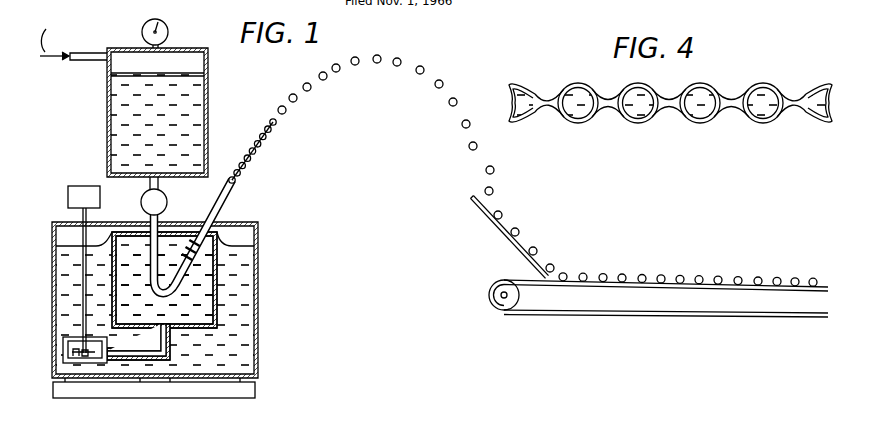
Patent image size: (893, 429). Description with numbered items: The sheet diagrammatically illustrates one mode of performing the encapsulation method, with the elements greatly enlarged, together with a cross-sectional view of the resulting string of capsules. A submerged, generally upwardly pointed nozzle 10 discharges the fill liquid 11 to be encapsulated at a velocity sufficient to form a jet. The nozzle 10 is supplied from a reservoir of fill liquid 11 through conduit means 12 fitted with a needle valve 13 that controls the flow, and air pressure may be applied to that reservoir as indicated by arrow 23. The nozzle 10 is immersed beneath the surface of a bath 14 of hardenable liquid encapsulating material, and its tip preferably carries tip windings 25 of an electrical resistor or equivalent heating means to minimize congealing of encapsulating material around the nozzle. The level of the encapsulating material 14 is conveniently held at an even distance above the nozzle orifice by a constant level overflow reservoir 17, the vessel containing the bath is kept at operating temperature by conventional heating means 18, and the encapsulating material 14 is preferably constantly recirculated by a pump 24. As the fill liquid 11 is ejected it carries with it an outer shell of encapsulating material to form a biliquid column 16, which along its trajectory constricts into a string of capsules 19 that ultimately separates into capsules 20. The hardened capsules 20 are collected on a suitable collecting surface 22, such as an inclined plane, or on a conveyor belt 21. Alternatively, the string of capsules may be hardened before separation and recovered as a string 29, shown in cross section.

In FIG. 1, the nozzle 10 is at (199, 231).
In FIG. 1, the liquid to be encapsulated 11 is at (125, 101).
In FIG. 1, the conduit means 12 is at (148, 214).
In FIG. 1, the needle valve 13 is at (163, 198).
In FIG. 1, the bath of hardenable liquid encapsulating material 14 is at (200, 288).
In FIG. 1, the biliquid column 16 is at (212, 228).
In FIG. 1, the constant level overflow reservoir 17 is at (218, 313).
In FIG. 1, the heating means 18 is at (208, 381).
In FIG. 1, the string of capsules 19 is at (246, 163).
In FIG. 1, the capsules 20 is at (395, 66).
In FIG. 1, the conveyor belt 21 is at (643, 314).
In FIG. 1, the collecting surface 22 is at (512, 245).
In FIG. 1, the arrow indicating air pressure 23 is at (92, 52).
In FIG. 1, the pump 24 is at (68, 193).
In FIG. 1, the tip windings 25 is at (210, 239).
In FIG. 4, the string 29 is at (640, 123).